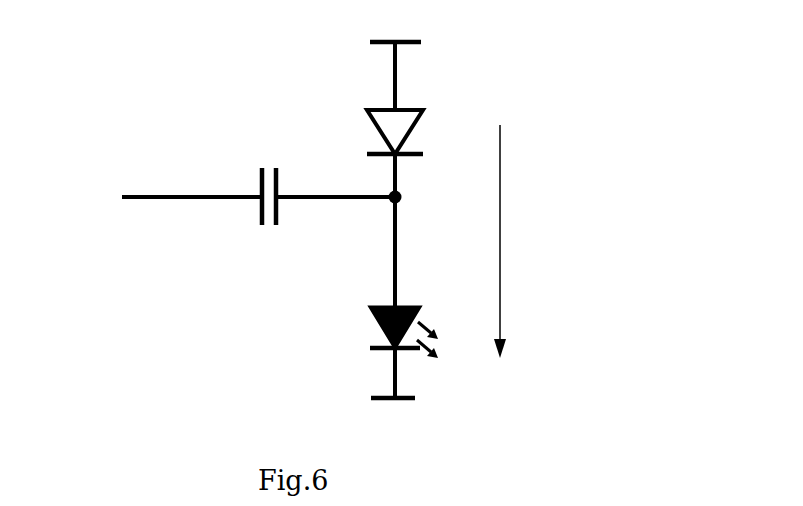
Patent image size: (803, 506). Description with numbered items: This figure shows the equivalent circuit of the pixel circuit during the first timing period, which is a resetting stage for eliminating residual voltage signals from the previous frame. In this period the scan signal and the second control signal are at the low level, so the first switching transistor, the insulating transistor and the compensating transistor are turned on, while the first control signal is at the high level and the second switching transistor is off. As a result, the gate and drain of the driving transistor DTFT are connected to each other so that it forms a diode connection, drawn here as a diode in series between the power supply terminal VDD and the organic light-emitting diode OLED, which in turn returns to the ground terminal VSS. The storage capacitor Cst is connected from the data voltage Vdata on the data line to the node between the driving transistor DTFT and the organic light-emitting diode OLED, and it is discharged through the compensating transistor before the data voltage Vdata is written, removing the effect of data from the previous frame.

The power supply terminal VDD is at (400, 55).
The driving transistor DTFT is at (429, 199).
The storage capacitor Cst is at (258, 175).
The data voltage Vdata is at (103, 185).
The organic light-emitting diode OLED is at (364, 340).
The ground terminal VSS is at (400, 420).